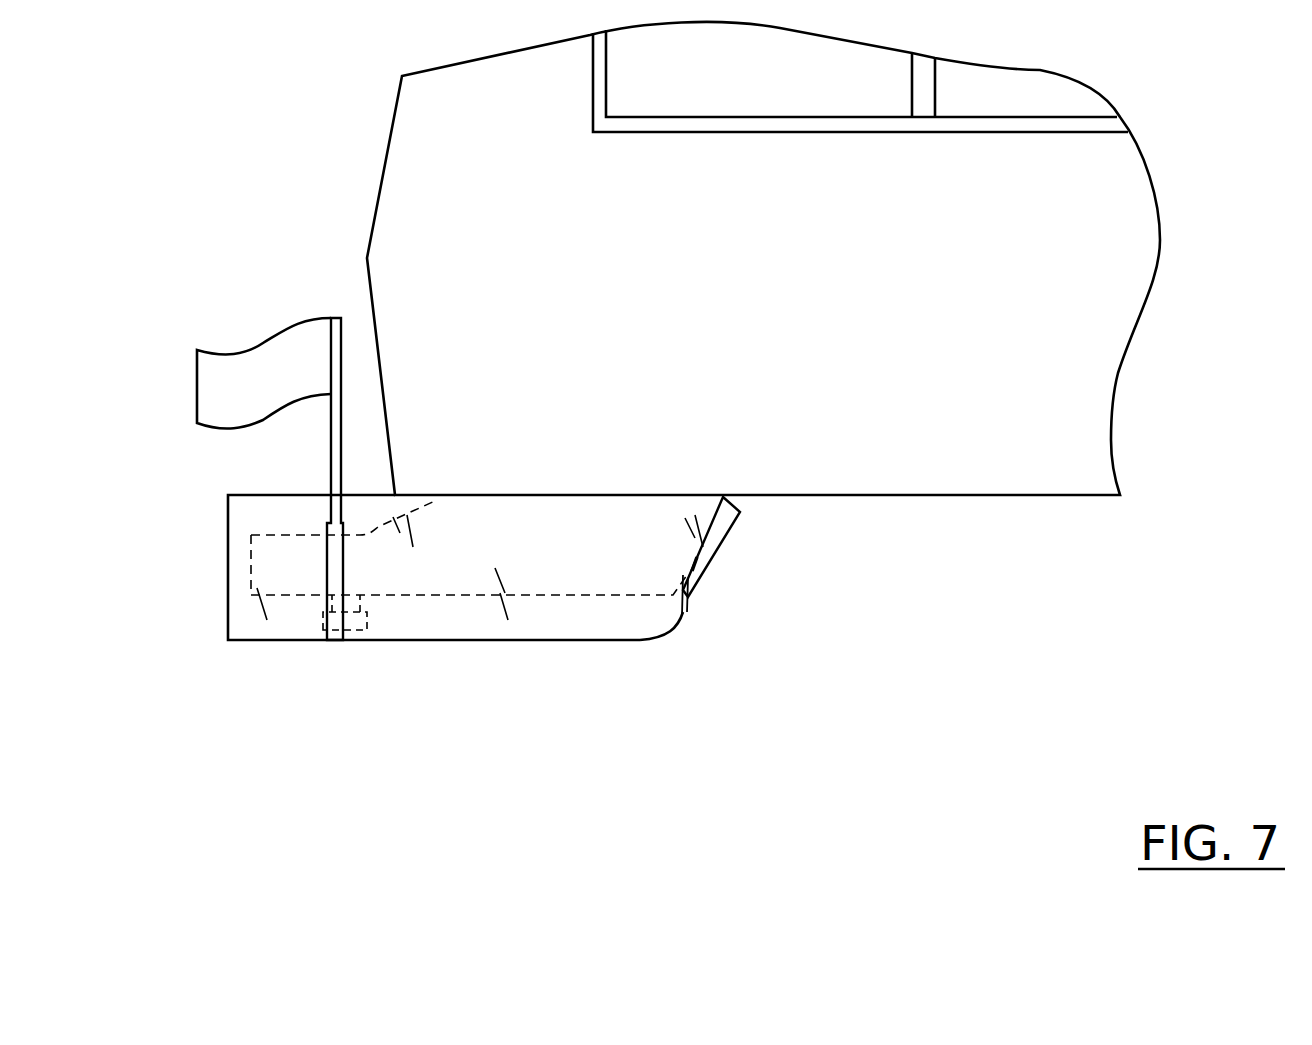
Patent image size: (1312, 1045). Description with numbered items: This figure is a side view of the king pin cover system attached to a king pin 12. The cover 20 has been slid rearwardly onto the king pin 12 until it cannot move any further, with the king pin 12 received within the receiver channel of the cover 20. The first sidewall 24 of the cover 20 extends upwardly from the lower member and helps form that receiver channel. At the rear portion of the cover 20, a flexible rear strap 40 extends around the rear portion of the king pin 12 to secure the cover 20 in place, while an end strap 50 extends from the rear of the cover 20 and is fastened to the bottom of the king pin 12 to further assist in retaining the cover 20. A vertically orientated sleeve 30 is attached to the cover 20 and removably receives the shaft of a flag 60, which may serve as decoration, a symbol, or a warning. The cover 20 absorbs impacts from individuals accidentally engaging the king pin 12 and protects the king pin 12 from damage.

The king pin 12 is at (733, 508).
The cover 20 is at (480, 639).
The first sidewall 24 is at (635, 632).
The sleeve 30 is at (333, 640).
The rear strap 40 is at (728, 548).
The end strap 50 is at (688, 592).
The flag 60 is at (203, 370).